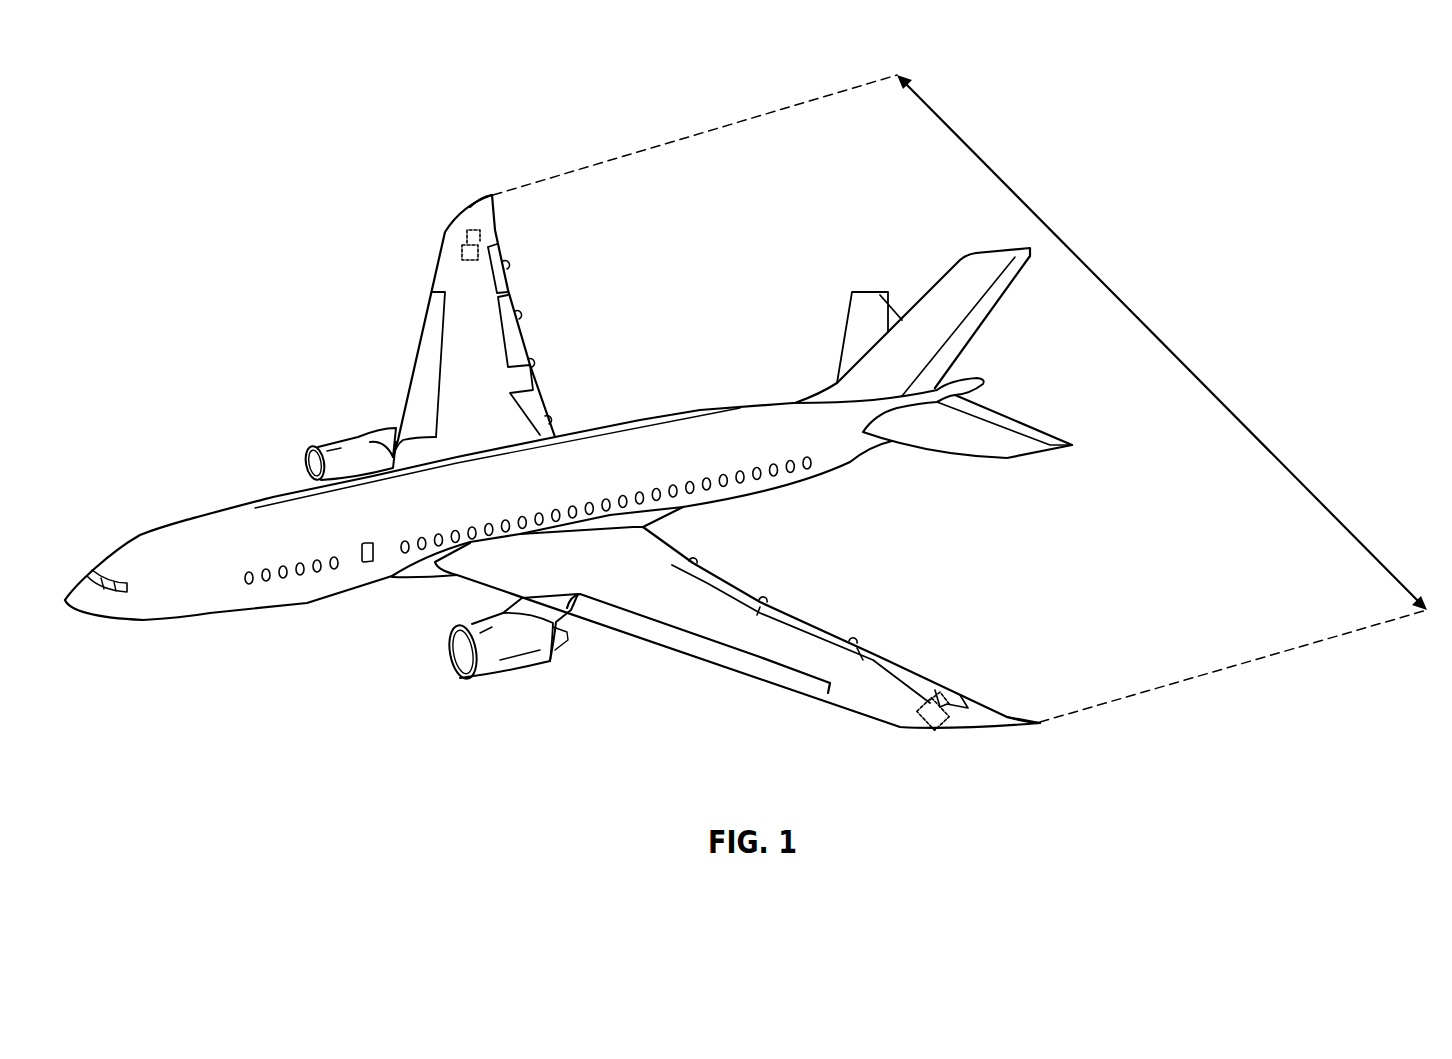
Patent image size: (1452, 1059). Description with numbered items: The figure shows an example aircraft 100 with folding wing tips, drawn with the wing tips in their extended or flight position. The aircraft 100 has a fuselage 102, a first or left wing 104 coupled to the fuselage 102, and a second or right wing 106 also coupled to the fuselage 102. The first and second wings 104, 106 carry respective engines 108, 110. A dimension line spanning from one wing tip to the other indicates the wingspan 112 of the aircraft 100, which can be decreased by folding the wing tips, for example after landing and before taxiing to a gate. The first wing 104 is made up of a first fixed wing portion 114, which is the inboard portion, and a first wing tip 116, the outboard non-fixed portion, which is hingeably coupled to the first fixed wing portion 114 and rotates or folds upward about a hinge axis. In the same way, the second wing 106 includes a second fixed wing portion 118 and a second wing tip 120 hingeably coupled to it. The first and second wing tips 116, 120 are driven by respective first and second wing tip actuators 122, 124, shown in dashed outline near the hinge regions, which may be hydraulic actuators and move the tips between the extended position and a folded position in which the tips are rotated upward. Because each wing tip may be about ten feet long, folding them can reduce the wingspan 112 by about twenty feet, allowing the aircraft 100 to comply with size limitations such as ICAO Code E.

The aircraft 100 is at (200, 127).
The fuselage 102 is at (205, 510).
The first wing 104 is at (870, 695).
The second wing 106 is at (450, 260).
The engine 108 is at (530, 675).
The engine 110 is at (334, 437).
The wingspan 112 is at (1170, 349).
The first fixed wing portion 114 is at (702, 617).
The first wing tip 116 is at (1010, 722).
The second fixed wing portion 118 is at (462, 323).
The second wing tip 120 is at (473, 215).
The first wing tip actuator 122 is at (935, 700).
The second wing tip actuator 124 is at (488, 237).